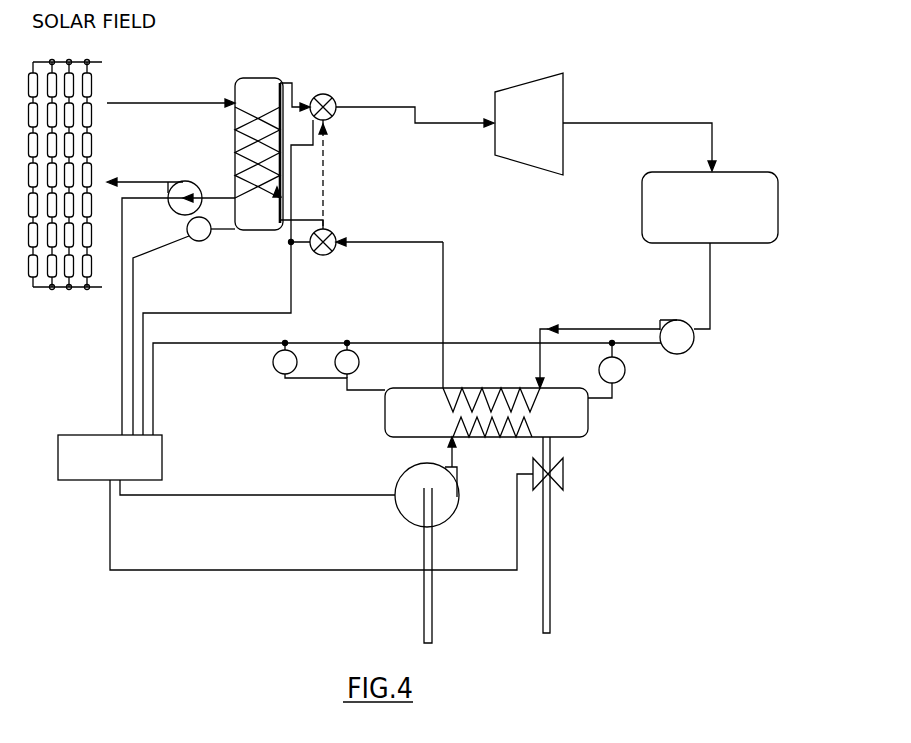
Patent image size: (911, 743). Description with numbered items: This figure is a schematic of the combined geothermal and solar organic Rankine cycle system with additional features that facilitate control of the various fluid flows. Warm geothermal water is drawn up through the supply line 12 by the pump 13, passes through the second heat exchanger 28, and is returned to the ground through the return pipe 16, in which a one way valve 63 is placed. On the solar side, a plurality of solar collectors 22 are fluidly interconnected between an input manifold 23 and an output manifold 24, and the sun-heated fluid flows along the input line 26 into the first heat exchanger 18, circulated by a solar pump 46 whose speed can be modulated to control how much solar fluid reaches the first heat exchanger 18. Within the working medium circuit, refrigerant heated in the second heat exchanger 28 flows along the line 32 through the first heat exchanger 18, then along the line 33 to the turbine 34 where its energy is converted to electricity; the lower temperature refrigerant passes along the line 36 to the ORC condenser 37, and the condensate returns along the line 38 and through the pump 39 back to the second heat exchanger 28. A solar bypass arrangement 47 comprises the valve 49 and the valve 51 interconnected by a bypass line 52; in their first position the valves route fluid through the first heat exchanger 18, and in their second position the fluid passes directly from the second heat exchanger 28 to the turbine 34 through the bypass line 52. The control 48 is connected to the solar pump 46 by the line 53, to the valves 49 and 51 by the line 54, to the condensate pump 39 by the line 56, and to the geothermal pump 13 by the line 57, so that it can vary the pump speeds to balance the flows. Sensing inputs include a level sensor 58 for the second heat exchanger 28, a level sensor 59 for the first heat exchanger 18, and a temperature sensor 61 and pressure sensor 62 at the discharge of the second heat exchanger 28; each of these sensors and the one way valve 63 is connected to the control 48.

The supply line 12 is at (433, 562).
The pump 13 is at (457, 498).
The return pipe 16 is at (552, 512).
The first heat exchanger 18 is at (263, 78).
The solar collectors 22 is at (95, 147).
The input manifold 23 is at (77, 288).
The output manifold 24 is at (100, 62).
The input line 26 is at (163, 102).
The second heat exchanger 28 is at (582, 418).
The line 32 is at (445, 283).
The line 33 is at (400, 106).
The turbine 34 is at (563, 86).
The line 36 is at (638, 123).
The ORC condenser 37 is at (742, 172).
The line 38 is at (712, 283).
The pump 39 is at (688, 346).
The solar pump 46 is at (188, 182).
The solar bypass arrangement 47 is at (362, 82).
The control 48 is at (155, 448).
The valve 49 is at (323, 93).
The valve 51 is at (330, 256).
The bypass line 52 is at (326, 153).
The line 53 is at (123, 247).
The line 54 is at (230, 313).
The line 56 is at (313, 343).
The line 57 is at (220, 495).
The level sensor 58 is at (625, 368).
The level sensor 59 is at (207, 238).
The sensor 61 is at (273, 362).
The sensor 62 is at (360, 362).
The one way valve 63 is at (560, 463).